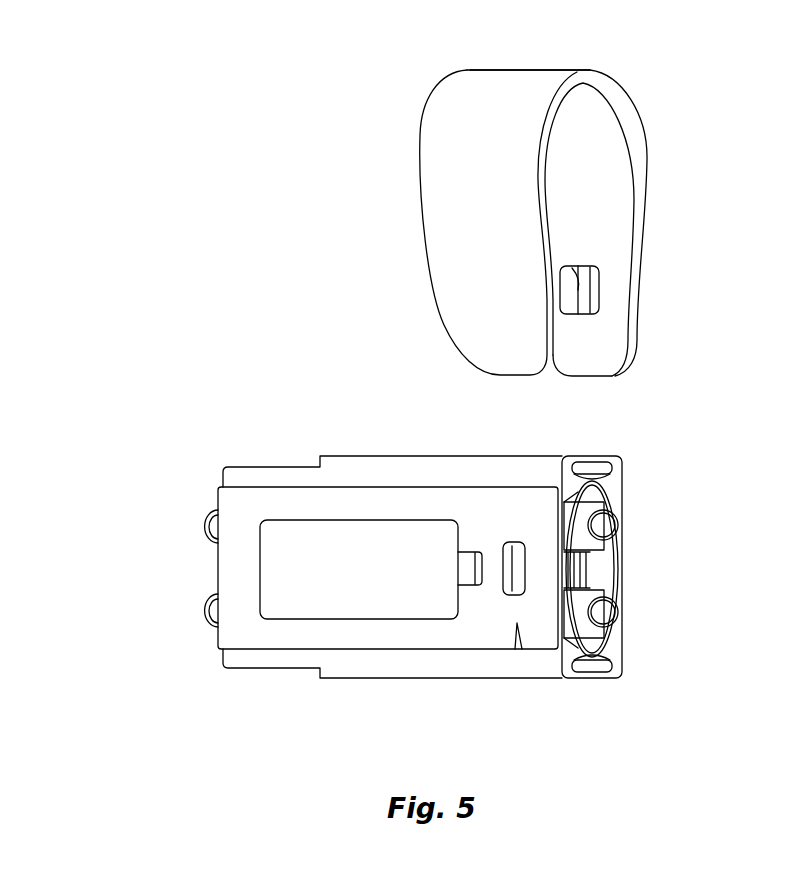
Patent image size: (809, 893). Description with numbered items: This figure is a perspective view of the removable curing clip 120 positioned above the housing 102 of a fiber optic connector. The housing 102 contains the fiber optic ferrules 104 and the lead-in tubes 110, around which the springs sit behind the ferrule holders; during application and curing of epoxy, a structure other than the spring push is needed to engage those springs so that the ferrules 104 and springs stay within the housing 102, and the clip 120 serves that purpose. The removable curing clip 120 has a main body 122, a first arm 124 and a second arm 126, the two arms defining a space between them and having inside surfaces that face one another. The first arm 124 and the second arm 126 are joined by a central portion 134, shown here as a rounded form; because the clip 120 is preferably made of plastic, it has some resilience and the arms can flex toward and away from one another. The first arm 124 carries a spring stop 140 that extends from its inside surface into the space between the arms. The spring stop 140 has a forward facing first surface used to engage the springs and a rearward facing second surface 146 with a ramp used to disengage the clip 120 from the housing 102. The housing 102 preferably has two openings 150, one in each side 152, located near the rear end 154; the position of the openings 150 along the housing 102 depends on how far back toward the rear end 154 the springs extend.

The housing 102 is at (244, 630).
The fiber optic ferrules 104 is at (206, 611).
The lead-in tubes 110 is at (610, 612).
The removable curing clip 120 is at (670, 95).
The main body 122 is at (445, 132).
The first arm 124 is at (636, 364).
The second arm 126 is at (470, 327).
The central portion 134 is at (553, 70).
The spring stop 140 is at (587, 313).
The second surface 146 is at (582, 270).
The openings 150 is at (514, 597).
The side 152 is at (470, 630).
The rear end 154 is at (622, 508).